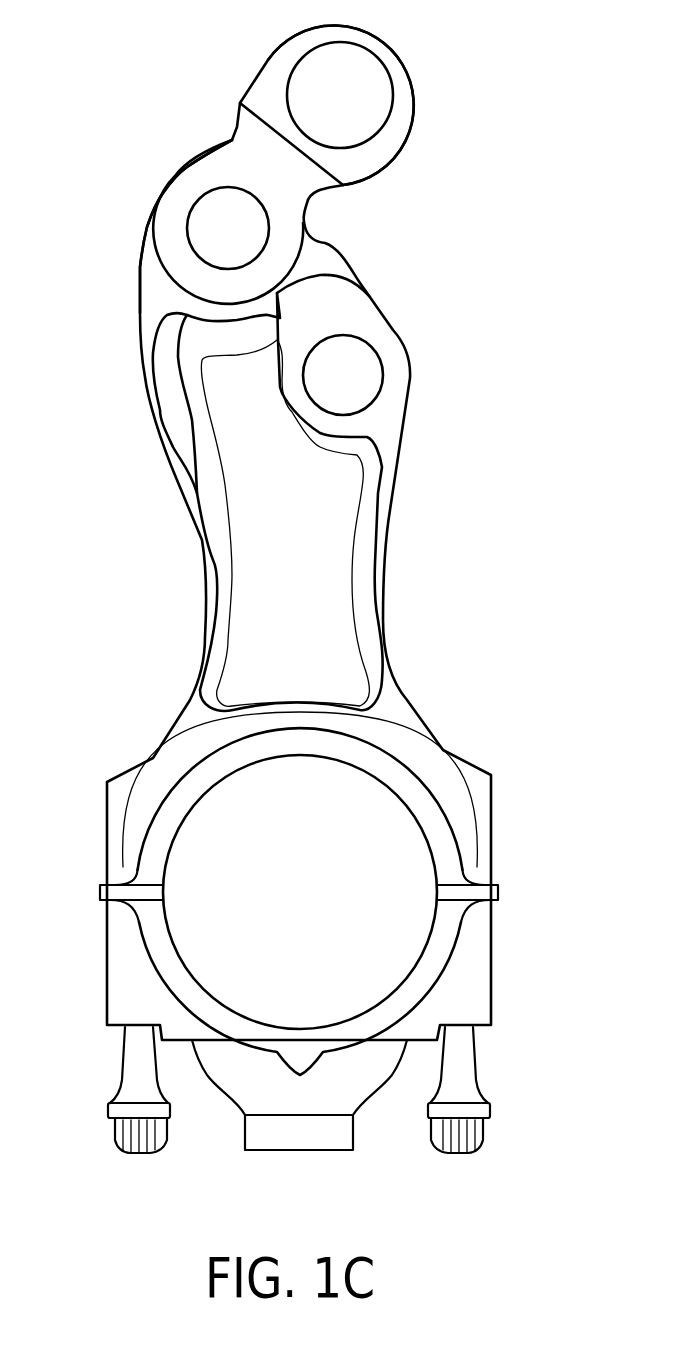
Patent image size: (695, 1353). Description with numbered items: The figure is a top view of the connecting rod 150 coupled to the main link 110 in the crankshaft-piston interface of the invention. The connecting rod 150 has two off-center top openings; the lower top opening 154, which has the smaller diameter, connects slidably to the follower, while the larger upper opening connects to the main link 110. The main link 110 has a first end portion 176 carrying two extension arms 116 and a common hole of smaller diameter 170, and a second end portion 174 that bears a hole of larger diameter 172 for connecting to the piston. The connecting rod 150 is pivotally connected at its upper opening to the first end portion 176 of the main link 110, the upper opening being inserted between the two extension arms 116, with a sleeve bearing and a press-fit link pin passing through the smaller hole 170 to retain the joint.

The main link 110 is at (248, 163).
The extension arms 116 is at (173, 187).
The connecting rod 150 is at (492, 830).
The lower top opening 154 is at (370, 360).
The hole of smaller diameter 170 is at (208, 228).
The hole of larger diameter 172 is at (377, 98).
The second end portion 174 is at (390, 43).
The first end portion 176 is at (188, 263).